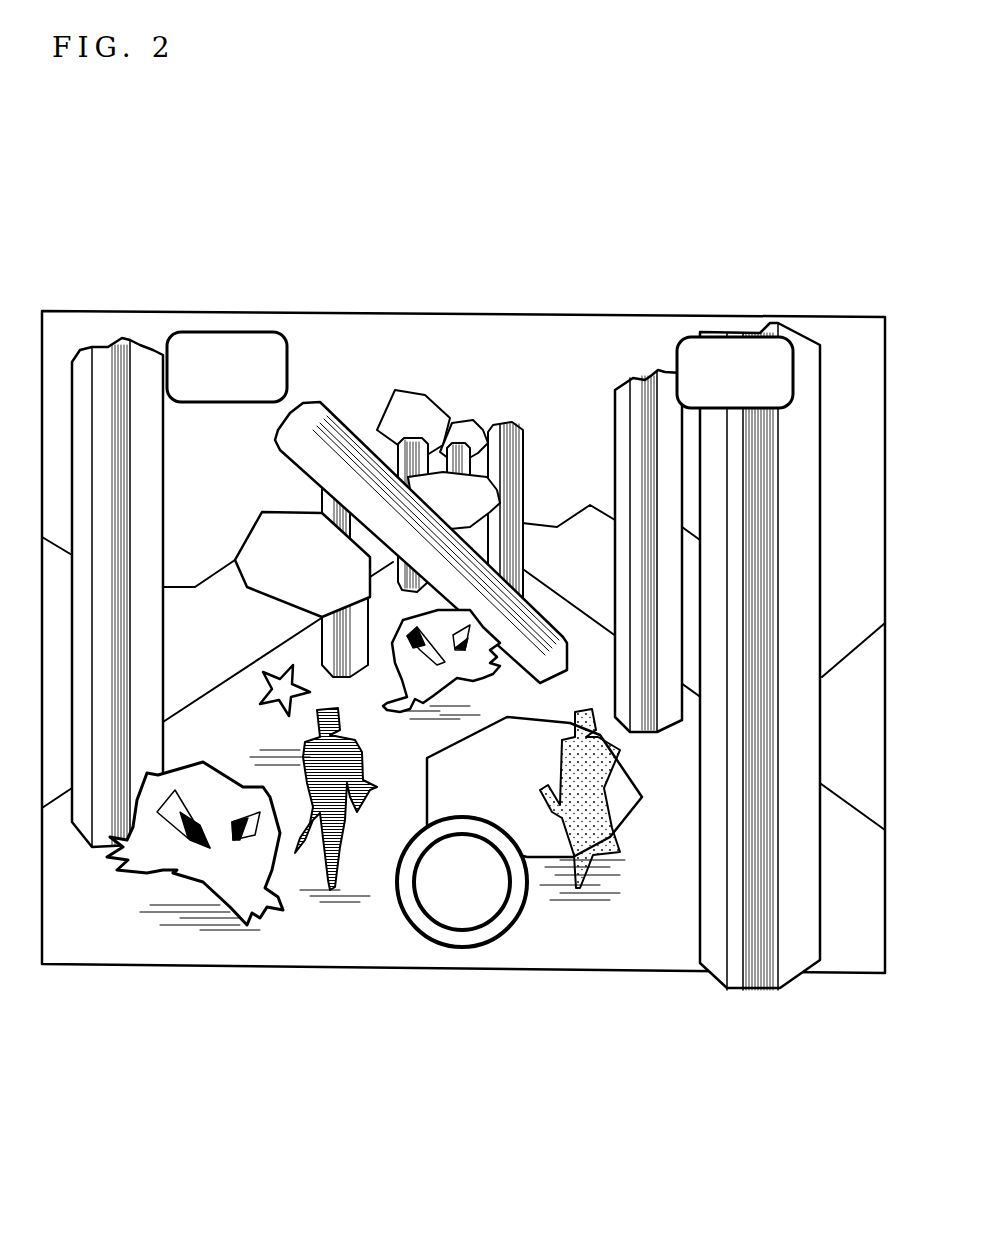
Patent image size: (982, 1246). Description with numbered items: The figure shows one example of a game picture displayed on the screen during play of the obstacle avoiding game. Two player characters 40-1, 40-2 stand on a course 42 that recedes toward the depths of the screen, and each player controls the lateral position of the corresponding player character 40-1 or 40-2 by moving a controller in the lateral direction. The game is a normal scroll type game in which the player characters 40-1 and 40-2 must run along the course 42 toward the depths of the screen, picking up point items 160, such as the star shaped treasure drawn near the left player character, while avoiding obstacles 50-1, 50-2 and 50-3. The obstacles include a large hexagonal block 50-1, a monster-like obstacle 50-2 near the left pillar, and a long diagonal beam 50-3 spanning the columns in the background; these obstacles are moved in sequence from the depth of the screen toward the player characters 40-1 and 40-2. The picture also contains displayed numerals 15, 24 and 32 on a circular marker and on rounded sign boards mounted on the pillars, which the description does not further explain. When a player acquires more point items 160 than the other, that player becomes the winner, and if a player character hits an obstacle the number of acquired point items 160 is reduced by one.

The target circle marker 15 is at (462, 882).
The displayed numeral sign on pillar 24 is at (735, 372).
The displayed numeral sign 32 is at (227, 367).
The player character 40-1 is at (627, 846).
The player character 40-2 is at (310, 858).
The course 42 is at (845, 932).
The obstacle 50-1 is at (257, 540).
The obstacle 50-2 is at (155, 858).
The obstacle 50-3 is at (312, 418).
The point item 160 is at (268, 708).